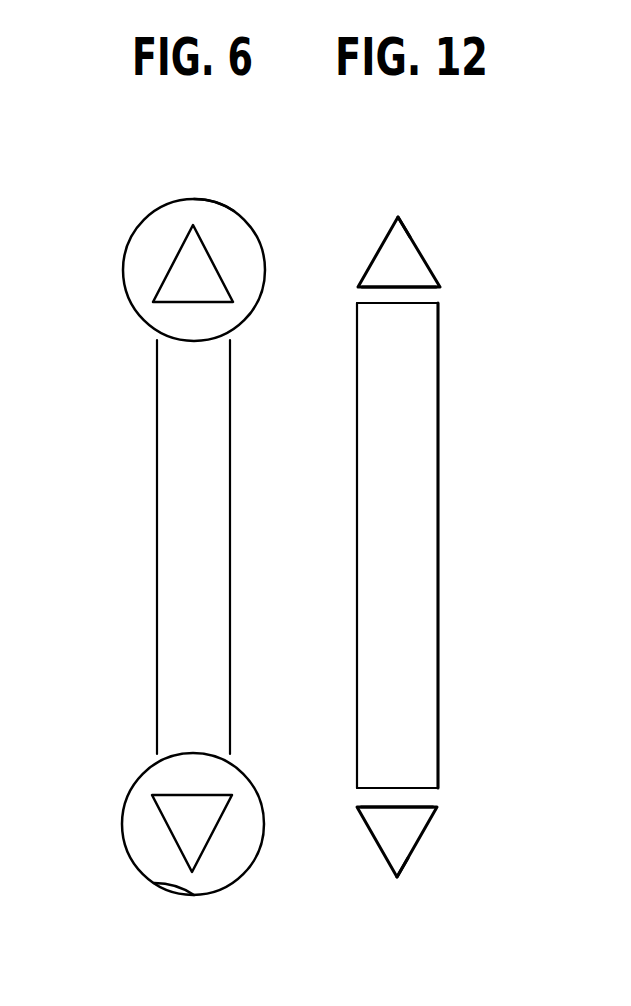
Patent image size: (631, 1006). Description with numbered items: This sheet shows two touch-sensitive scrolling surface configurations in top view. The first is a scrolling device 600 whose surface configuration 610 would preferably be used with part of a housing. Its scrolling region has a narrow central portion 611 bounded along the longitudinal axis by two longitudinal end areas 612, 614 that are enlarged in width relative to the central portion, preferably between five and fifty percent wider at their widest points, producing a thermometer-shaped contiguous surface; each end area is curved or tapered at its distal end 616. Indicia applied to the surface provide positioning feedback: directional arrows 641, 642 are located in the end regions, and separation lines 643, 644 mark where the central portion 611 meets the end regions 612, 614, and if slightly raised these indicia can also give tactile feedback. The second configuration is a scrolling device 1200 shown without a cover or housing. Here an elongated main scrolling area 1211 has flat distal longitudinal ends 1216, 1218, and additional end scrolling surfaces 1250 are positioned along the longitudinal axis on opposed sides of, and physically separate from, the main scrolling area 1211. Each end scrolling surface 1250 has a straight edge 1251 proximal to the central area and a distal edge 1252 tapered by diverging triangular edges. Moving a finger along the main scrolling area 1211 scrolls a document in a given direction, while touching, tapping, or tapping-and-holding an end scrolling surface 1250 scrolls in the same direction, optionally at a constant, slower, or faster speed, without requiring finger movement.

In FIG. 6, the scrolling device 600 is at (98, 472).
In FIG. 6, the surface configuration 610 is at (223, 418).
In FIG. 6, the central portion 611 is at (185, 538).
In FIG. 6, the longitudinal end area 612 is at (238, 243).
In FIG. 6, the longitudinal end area 614 is at (242, 813).
In FIG. 6, the distal end 616 is at (196, 208).
In FIG. 6, the directional arrow 641 is at (173, 255).
In FIG. 6, the directional arrow 642 is at (163, 818).
In FIG. 6, the separation line 643 is at (190, 333).
In FIG. 6, the separation line 644 is at (192, 753).
In FIG. 12, the scrolling device 1200 is at (470, 455).
In FIG. 12, the main scrolling area 1211 is at (400, 555).
In FIG. 12, the distal longitudinal end 1216 is at (398, 303).
In FIG. 12, the distal longitudinal end 1218 is at (405, 786).
In FIG. 12, the end scrolling surface 1250 is at (405, 255).
In FIG. 12, the proximal edge 1251 is at (405, 286).
In FIG. 12, the distal edge 1252 is at (408, 223).